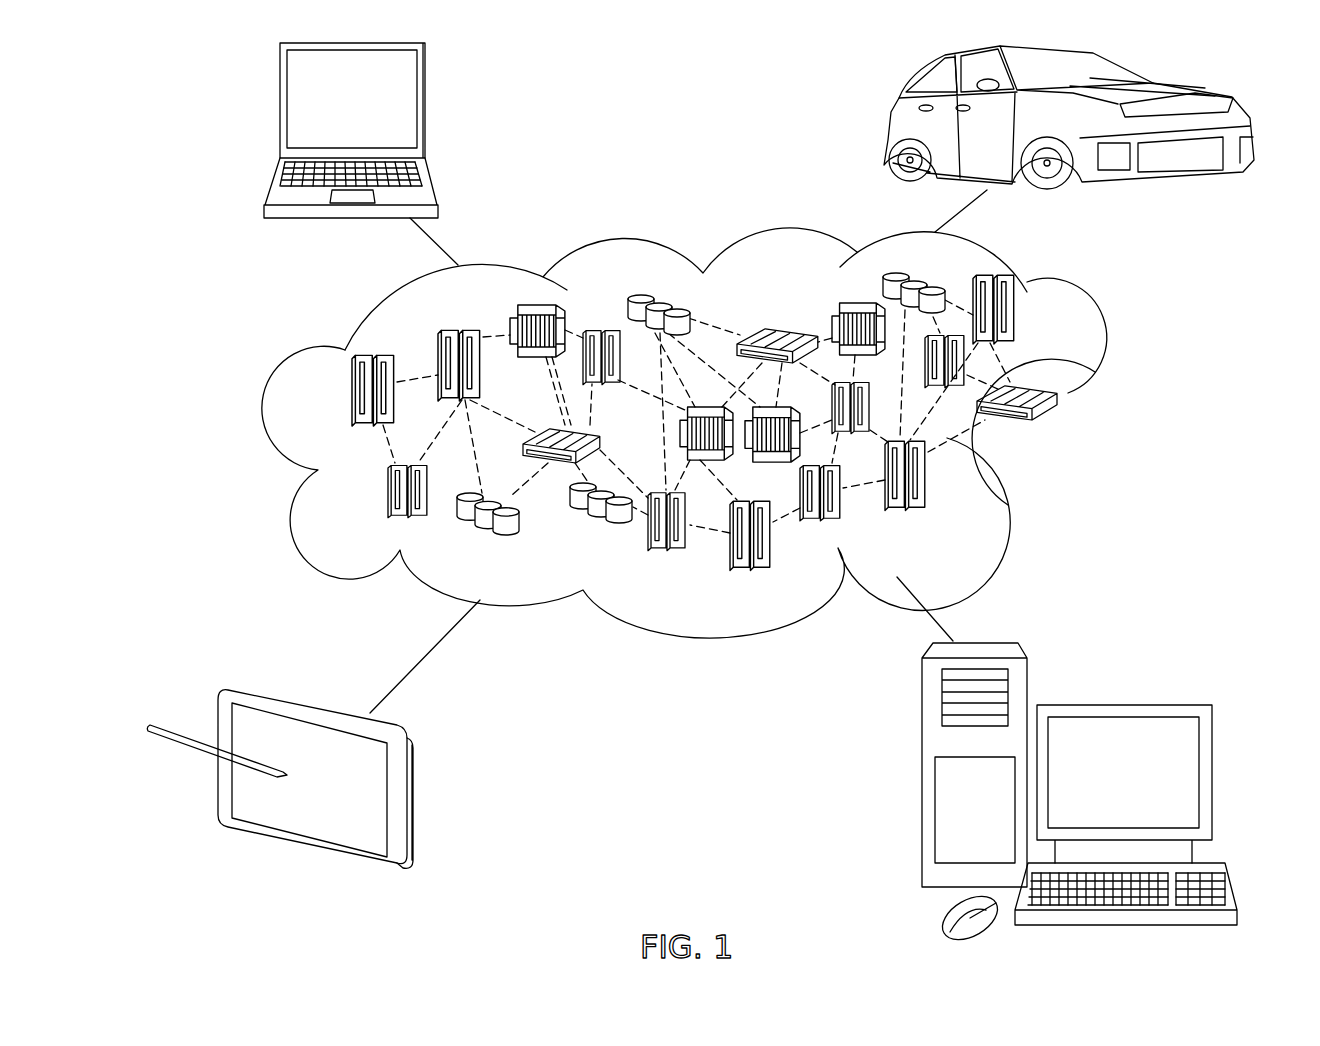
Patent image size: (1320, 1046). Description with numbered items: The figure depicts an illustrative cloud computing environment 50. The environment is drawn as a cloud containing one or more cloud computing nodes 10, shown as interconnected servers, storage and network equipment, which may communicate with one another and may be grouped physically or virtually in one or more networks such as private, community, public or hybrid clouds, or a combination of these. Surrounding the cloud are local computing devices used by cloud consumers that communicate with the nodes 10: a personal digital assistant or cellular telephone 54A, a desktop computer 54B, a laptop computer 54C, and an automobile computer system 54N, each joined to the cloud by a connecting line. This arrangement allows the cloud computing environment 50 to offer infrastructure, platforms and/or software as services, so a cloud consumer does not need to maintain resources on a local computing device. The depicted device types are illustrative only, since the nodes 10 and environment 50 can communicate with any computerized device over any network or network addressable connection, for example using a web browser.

The cloud computing nodes 10 is at (1058, 430).
The cloud computing environment 50 is at (1122, 398).
The personal digital assistant (PDA) or cellular telephone 54A is at (412, 805).
The desktop computer 54B is at (1120, 705).
The laptop computer 54C is at (427, 110).
The automobile computer system 54N is at (888, 127).